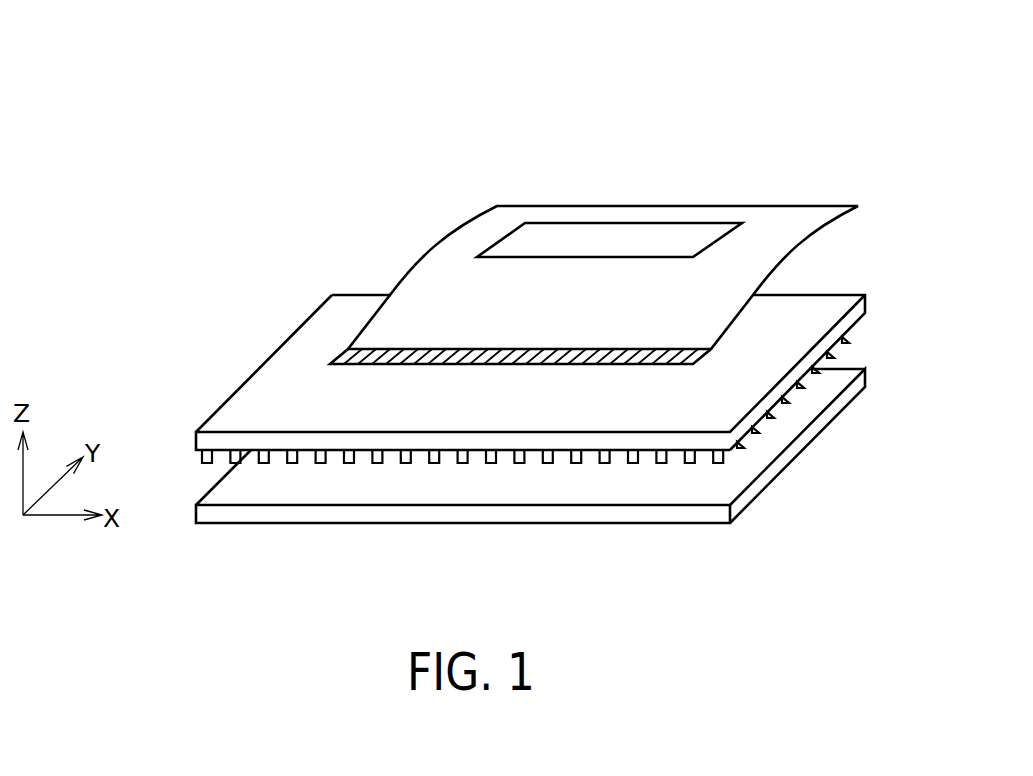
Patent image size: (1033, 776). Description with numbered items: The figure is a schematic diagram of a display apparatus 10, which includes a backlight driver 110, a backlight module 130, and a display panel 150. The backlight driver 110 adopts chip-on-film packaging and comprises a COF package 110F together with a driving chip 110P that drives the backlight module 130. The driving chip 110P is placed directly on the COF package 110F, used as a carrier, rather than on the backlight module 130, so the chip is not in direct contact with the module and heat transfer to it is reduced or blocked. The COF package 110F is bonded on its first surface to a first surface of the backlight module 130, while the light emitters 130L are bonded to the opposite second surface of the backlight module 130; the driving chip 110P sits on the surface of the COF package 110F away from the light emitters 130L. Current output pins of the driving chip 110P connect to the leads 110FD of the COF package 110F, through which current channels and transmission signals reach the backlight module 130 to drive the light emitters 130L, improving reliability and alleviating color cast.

The display apparatus 10 is at (205, 167).
The backlight driver 110 is at (540, 380).
The COF package 110F is at (762, 210).
The driving chip 110P is at (612, 237).
The leads 110FD is at (345, 349).
The backlight module 130 is at (830, 300).
The light emitters 130L is at (690, 463).
The display panel 150 is at (792, 427).